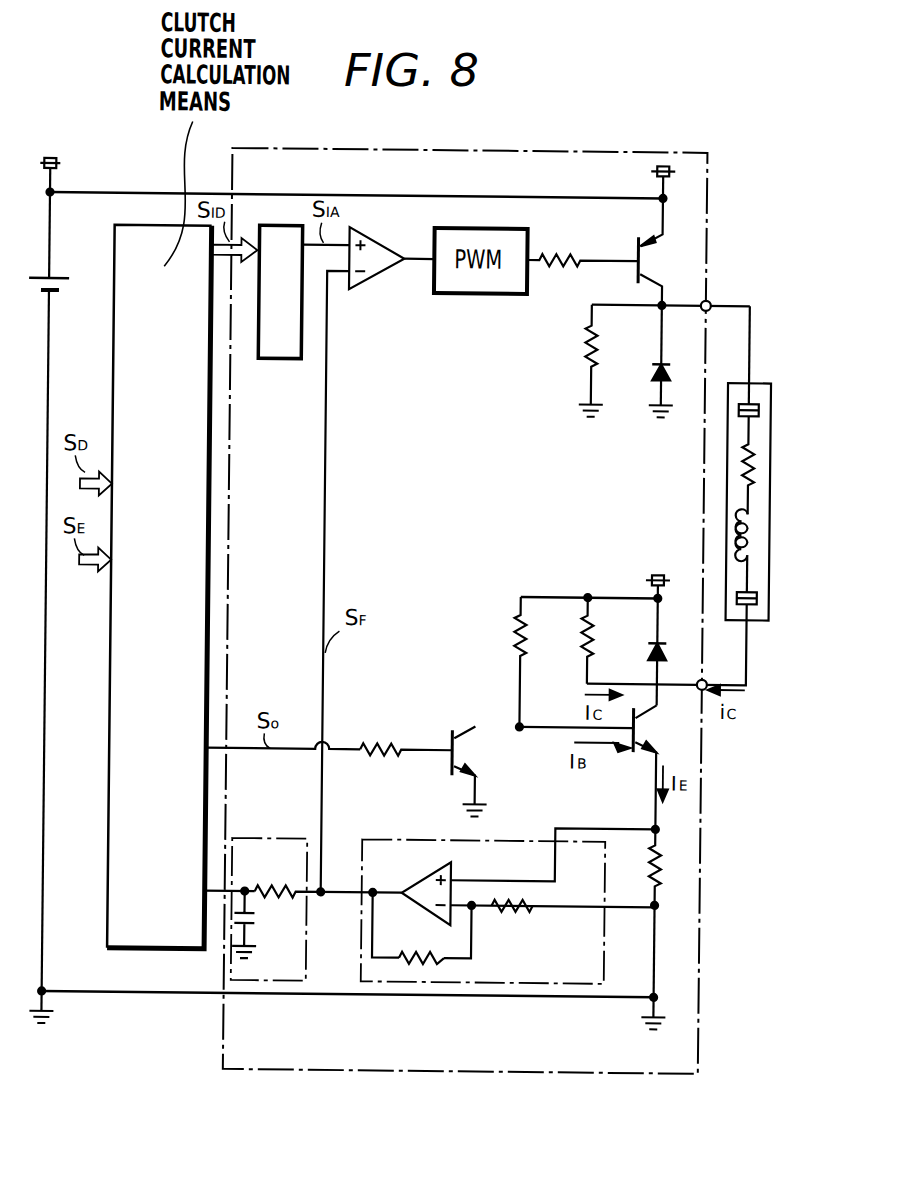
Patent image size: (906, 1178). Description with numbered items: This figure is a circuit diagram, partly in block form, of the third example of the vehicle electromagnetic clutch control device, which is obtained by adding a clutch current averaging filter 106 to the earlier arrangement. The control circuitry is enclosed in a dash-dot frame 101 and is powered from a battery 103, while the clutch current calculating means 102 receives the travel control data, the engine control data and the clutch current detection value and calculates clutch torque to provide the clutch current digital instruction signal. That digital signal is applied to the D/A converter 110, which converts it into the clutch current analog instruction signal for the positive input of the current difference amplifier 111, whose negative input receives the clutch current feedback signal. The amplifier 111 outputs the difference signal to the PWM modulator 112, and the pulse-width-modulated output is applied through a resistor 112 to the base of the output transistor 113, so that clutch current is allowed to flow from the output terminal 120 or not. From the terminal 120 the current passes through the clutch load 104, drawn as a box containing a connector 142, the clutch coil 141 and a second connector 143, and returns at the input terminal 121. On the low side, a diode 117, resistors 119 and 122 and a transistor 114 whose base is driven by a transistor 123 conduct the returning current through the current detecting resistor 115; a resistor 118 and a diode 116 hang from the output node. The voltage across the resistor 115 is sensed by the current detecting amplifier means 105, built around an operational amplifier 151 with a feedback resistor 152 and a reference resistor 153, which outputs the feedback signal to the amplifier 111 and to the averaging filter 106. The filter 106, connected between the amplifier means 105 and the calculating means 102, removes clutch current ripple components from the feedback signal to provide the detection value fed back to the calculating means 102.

The clutch control unit 101 is at (708, 188).
The clutch current calculating means 102 is at (113, 716).
The battery 103 is at (55, 276).
The electromagnetic clutch coil assembly 104 is at (759, 496).
The current detecting amplifier means 105 is at (508, 893).
The clutch current averaging filter 106 is at (254, 837).
The D/A converter 110 is at (282, 357).
The current difference amplifier 111 is at (388, 237).
The PWM modulator 112 is at (531, 233).
The output transistor 113 is at (660, 246).
The transistor 114 is at (646, 727).
The current detecting resistor 115 is at (665, 845).
The diode 116 is at (667, 364).
The diode 117 is at (663, 647).
The resistor 118 is at (623, 334).
The resistor 119 is at (594, 644).
The output terminal 120 is at (712, 292).
The input terminal 121 is at (706, 673).
The resistor 122 is at (550, 627).
The transistor 123 is at (486, 771).
The clutch coil 141 is at (755, 503).
The connector 142 is at (762, 402).
The connector 143 is at (758, 588).
The operational amplifier 151 is at (462, 873).
The feedback resistor 152 is at (425, 951).
The reference resistor 153 is at (525, 903).